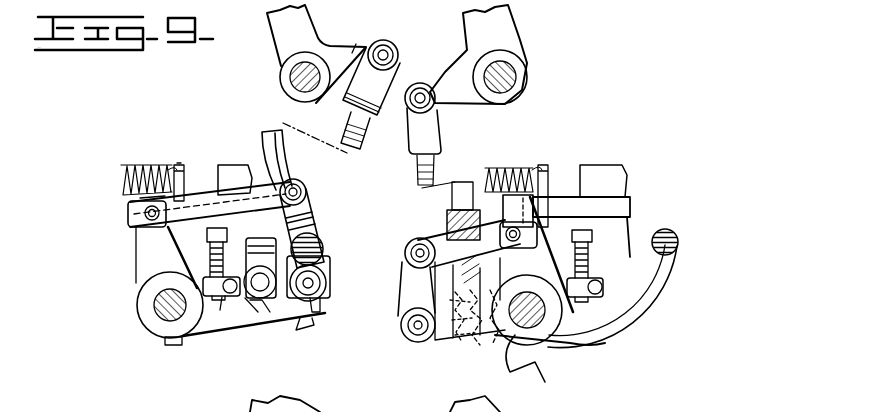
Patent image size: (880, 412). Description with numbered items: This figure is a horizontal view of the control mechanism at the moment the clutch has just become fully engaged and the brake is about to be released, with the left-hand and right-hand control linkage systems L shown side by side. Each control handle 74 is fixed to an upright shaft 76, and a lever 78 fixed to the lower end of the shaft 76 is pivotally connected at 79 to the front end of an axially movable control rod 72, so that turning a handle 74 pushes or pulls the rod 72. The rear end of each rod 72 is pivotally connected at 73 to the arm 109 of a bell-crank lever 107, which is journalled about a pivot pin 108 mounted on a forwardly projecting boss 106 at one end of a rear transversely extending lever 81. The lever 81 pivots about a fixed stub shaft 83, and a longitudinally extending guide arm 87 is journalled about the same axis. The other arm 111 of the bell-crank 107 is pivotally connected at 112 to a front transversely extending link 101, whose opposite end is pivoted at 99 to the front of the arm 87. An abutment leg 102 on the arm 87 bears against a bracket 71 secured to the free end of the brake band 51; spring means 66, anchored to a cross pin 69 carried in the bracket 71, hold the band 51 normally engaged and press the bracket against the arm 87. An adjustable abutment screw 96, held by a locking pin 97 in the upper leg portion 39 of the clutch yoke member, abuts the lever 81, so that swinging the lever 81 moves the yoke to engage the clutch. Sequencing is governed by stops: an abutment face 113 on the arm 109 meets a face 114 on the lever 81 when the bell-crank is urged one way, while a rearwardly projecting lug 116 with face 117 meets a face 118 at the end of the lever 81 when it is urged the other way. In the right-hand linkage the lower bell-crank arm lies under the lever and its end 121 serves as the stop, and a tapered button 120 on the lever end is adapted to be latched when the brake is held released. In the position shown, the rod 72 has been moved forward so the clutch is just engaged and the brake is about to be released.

The upper leg portion 39 is at (200, 278).
The brake band 51 is at (233, 172).
The spring means 66 is at (147, 162).
The cross pin 69 is at (174, 162).
The bracket 71 is at (183, 188).
The control rod 72 is at (356, 130).
The pivotal connection 73 is at (270, 257).
The control handle 74 is at (283, 30).
The upright shaft 76 is at (303, 77).
The lever 78 is at (352, 53).
The pivotal connection 79 is at (405, 22).
The rear transversely extending lever 81 is at (218, 336).
The fixed stub shaft 83 is at (158, 303).
The guide arm 87 is at (150, 251).
The adjustable abutment screw 96 is at (205, 275).
The locking pin 97 is at (226, 298).
The pivotal connection 99 is at (145, 213).
The front transversely extending link 101 is at (270, 192).
The abutment leg 102 is at (150, 196).
The boss 106 is at (305, 325).
The bell-crank lever 107 is at (371, 266).
The pivot pin 108 is at (312, 283).
The arm 109 is at (297, 325).
The arm 111 is at (313, 210).
The pivotal connection 112 is at (300, 190).
The abutment face 113 is at (255, 305).
The abutment face 114 is at (274, 320).
The lug 116 is at (325, 302).
The abutment face 117 is at (320, 310).
The abutment face 118 is at (312, 326).
The tapered button 120 is at (318, 237).
The end 121 is at (478, 338).
The control linkage system L is at (137, 280).